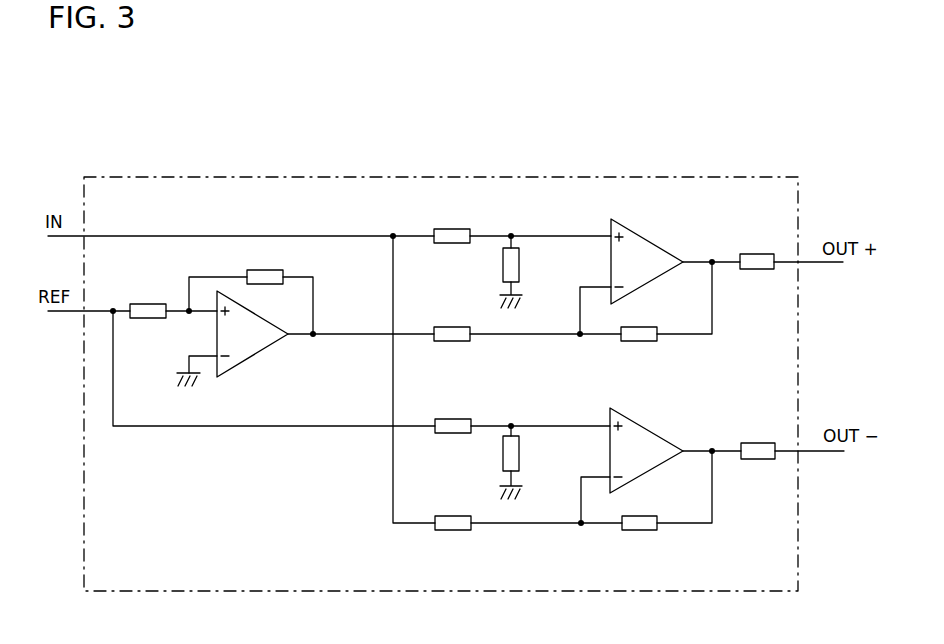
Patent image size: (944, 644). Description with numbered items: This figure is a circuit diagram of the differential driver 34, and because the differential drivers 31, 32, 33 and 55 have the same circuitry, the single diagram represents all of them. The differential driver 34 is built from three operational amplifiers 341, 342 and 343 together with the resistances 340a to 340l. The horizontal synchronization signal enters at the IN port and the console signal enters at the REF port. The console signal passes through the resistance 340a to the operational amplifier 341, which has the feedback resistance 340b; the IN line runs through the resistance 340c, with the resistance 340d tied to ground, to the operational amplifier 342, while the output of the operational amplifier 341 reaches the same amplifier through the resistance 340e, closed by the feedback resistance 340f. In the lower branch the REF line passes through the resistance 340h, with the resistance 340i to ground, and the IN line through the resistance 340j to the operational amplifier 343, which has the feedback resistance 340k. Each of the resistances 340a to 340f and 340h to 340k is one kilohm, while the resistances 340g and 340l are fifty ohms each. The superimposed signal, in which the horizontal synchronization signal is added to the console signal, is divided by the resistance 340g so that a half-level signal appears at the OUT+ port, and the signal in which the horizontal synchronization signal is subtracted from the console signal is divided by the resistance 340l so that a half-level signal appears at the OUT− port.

The differential driver 34 is at (441, 356).
The differential driver 31 is at (441, 356).
The differential driver 32 is at (441, 356).
The differential driver 33 is at (441, 356).
The differential driver 55 is at (313, 177).
The resistance 340a is at (144, 303).
The resistance 340b is at (271, 270).
The resistance 340c is at (450, 229).
The resistance 340d is at (520, 260).
The resistance 340e is at (450, 327).
The resistance 340f is at (640, 342).
The resistance 340g is at (756, 254).
The resistance 340h is at (450, 419).
The resistance 340i is at (521, 450).
The resistance 340j is at (450, 516).
The resistance 340k is at (640, 531).
The resistance 340l is at (757, 443).
The operational amplifier 341 is at (263, 353).
The operational amplifier 342 is at (643, 237).
The operational amplifier 343 is at (650, 427).